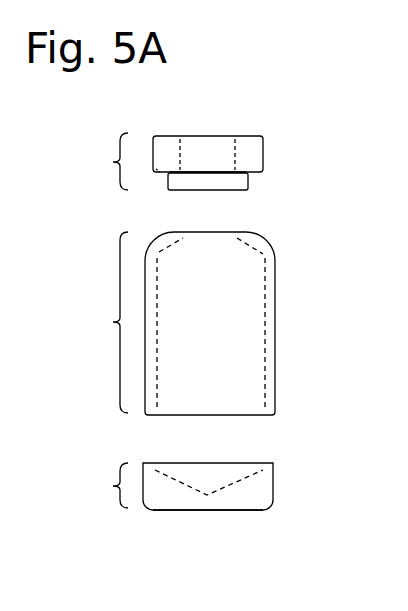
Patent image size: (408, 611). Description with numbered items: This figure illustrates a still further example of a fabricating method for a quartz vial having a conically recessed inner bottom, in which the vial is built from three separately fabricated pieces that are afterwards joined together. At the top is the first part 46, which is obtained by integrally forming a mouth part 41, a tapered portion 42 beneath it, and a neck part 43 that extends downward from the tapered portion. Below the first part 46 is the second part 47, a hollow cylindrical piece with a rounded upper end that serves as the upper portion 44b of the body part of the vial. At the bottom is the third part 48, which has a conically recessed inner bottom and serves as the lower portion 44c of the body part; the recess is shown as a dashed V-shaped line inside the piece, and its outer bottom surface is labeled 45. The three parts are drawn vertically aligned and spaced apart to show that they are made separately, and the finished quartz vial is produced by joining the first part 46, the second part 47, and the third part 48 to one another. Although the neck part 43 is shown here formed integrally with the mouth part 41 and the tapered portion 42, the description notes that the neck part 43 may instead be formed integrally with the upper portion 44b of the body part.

The mouth part 41 is at (263, 146).
The tapered portion 42 is at (251, 177).
The neck part 43 is at (248, 186).
The upper portion of body part 44b is at (275, 336).
The lower portion of body part 44c is at (273, 473).
The bottom surface 45 is at (185, 510).
The first part 46 is at (104, 161).
The second part 47 is at (104, 322).
The third part 48 is at (104, 485).